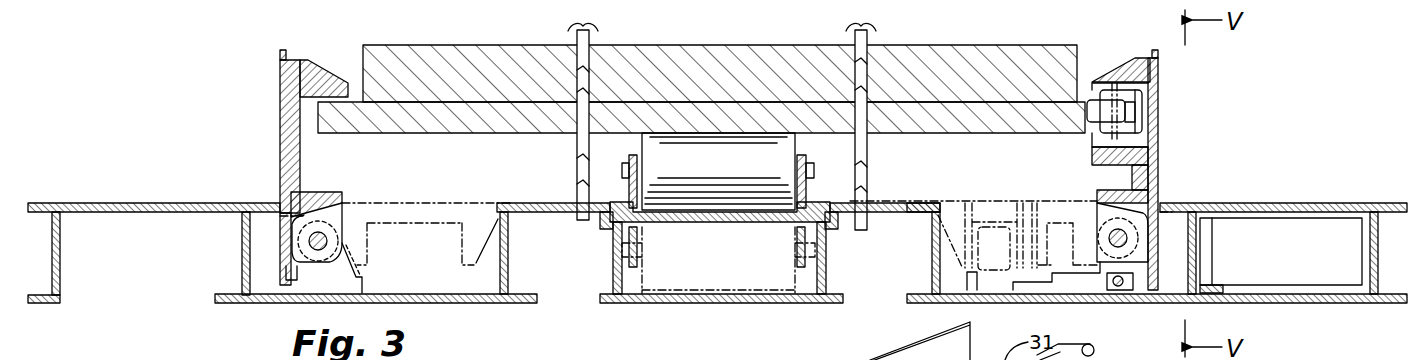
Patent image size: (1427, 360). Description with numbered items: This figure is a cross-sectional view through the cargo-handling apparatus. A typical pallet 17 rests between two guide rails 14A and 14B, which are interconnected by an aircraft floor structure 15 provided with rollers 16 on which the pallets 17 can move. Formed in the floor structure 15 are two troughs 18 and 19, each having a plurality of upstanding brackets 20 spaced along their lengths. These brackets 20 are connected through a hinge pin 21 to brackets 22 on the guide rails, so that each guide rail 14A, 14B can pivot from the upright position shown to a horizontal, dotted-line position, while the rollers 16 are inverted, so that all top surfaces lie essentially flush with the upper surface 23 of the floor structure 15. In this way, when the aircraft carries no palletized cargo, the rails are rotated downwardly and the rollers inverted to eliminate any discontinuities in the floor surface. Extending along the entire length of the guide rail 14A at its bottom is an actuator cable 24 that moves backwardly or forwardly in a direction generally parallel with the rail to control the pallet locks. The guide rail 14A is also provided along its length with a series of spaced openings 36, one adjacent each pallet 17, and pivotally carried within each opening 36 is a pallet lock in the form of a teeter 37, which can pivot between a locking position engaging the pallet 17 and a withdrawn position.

The guide rail 14A is at (1162, 63).
The guide rail 14B is at (281, 70).
The aircraft floor structure 15 is at (740, 303).
The rollers 16 is at (723, 171).
The pallet 17 is at (882, 45).
The trough 18 is at (995, 277).
The trough 19 is at (441, 275).
The upstanding brackets 20 is at (1099, 268).
The hinge pin 21 is at (1128, 240).
The brackets 22 is at (1097, 210).
The upper surface 23 is at (150, 203).
The actuator cable 24 is at (1118, 287).
The openings 36 is at (1145, 137).
The teeter 37 is at (1160, 100).